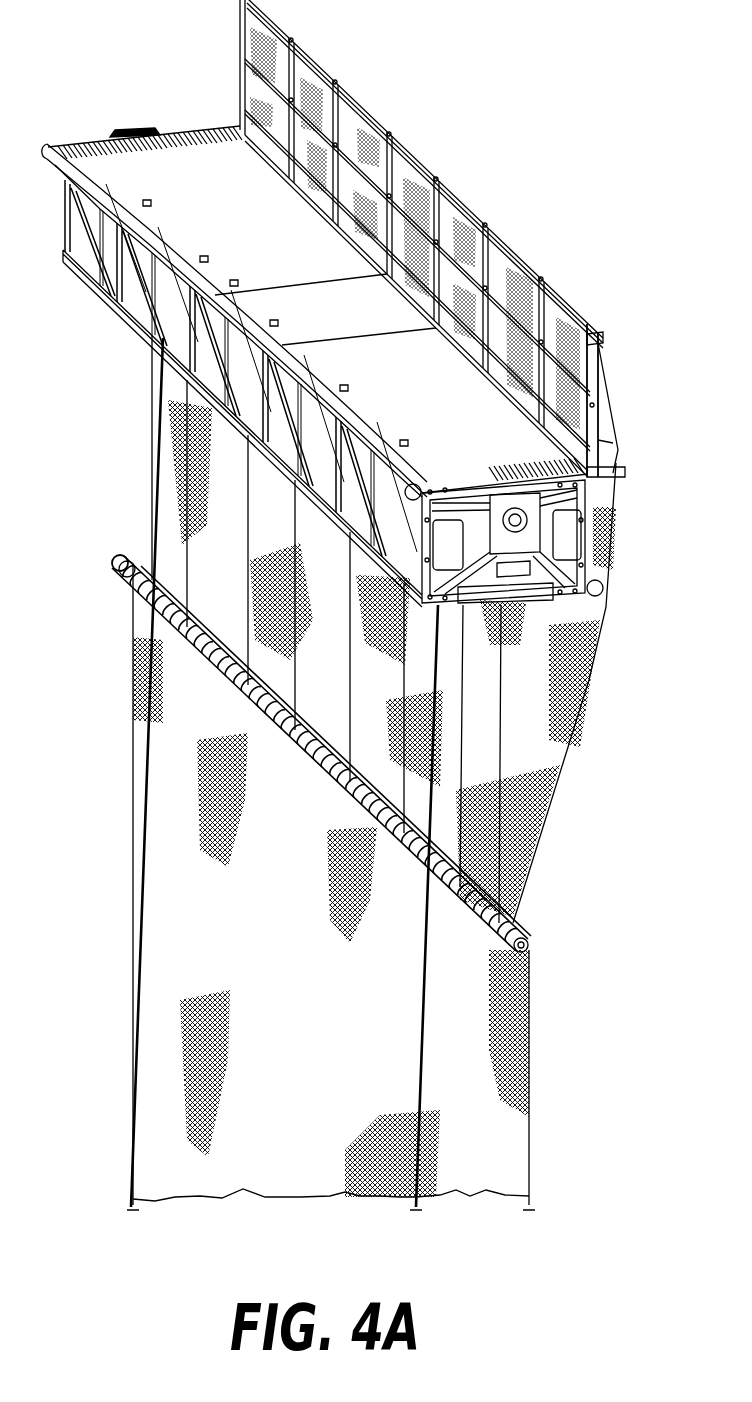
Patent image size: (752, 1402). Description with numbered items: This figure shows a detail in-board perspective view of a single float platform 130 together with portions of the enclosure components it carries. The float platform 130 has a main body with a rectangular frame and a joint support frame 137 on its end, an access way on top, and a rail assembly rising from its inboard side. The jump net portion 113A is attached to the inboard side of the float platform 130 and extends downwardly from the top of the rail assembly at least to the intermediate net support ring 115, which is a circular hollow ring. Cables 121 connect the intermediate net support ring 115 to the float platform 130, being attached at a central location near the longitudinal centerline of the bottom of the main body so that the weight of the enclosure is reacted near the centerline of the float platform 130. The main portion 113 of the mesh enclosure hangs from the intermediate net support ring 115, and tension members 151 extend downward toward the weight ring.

The float platform 130 is at (426, 164).
The joint support frame 137 is at (566, 505).
The jump net portion 113A is at (618, 552).
The cables 121 is at (461, 673).
The tension members 151 is at (146, 777).
The intermediate net support ring 115 is at (523, 933).
The main portion 113 is at (533, 1080).